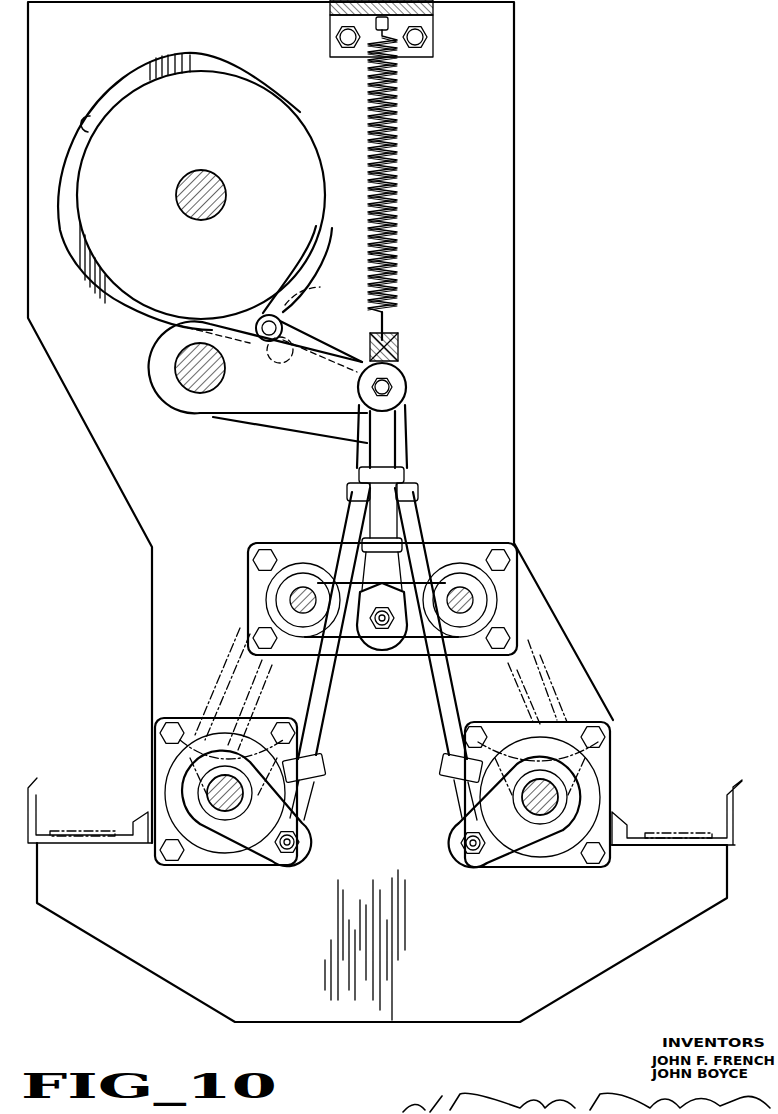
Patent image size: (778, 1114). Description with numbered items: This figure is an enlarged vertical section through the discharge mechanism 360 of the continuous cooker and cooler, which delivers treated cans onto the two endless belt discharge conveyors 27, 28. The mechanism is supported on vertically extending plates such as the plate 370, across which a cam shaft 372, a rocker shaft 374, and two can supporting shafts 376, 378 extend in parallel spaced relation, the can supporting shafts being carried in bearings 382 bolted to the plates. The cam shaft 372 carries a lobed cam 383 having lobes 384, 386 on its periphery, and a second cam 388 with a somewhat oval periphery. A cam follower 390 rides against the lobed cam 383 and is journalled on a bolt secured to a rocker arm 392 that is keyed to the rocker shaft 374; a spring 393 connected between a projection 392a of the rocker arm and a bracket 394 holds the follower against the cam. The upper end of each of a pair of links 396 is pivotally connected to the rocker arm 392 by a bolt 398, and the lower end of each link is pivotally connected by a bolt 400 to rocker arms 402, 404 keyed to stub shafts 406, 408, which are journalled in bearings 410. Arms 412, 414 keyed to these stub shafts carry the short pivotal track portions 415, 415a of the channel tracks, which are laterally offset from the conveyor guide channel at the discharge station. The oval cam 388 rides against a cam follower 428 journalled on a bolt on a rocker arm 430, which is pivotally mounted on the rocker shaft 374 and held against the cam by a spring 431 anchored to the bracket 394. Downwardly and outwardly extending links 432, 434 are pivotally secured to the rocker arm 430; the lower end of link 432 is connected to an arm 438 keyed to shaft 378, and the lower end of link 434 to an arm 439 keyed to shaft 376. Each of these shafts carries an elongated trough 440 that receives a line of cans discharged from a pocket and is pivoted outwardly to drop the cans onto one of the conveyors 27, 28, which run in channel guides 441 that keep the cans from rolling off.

The discharge conveyor 27 is at (88, 830).
The discharge conveyor 28 is at (668, 830).
The discharge mechanism 360 is at (530, 147).
The vertically extending plate 370 is at (180, 465).
The cam shaft 372 is at (196, 193).
The rocker shaft 374 is at (215, 384).
The can supporting shaft 376 is at (222, 792).
The can supporting shaft 378 is at (548, 792).
The bearing 382 is at (215, 862).
The cam 383 is at (142, 169).
The cam lobe 384 is at (250, 323).
The cam lobe 386 is at (90, 130).
The oval cam 388 is at (144, 66).
The cam follower 390 is at (311, 297).
The rocker arm 392 is at (308, 336).
The projection 392a is at (398, 338).
The spring 393 is at (392, 136).
The bracket 394 is at (330, 10).
The link 396 is at (388, 455).
The bolt 398 is at (392, 387).
The bolt 400 is at (386, 626).
The rocker arm 402 is at (288, 604).
The rocker arm 404 is at (480, 608).
The stub shaft 406 is at (300, 601).
The stub shaft 408 is at (462, 600).
The bearing 410 is at (302, 552).
The arm 412 is at (245, 630).
The arm 414 is at (525, 628).
The pivotal track portion 415 is at (228, 660).
The pivotal track portion 415a is at (548, 664).
The cam follower 428 is at (294, 360).
The rocker arm 430 is at (306, 424).
The spring 431 is at (399, 352).
The link 432 is at (412, 522).
The link 434 is at (357, 512).
The arm 438 is at (482, 810).
The arm 439 is at (292, 815).
The elongated trough 440 is at (215, 760).
The channel guide 441 is at (30, 786).